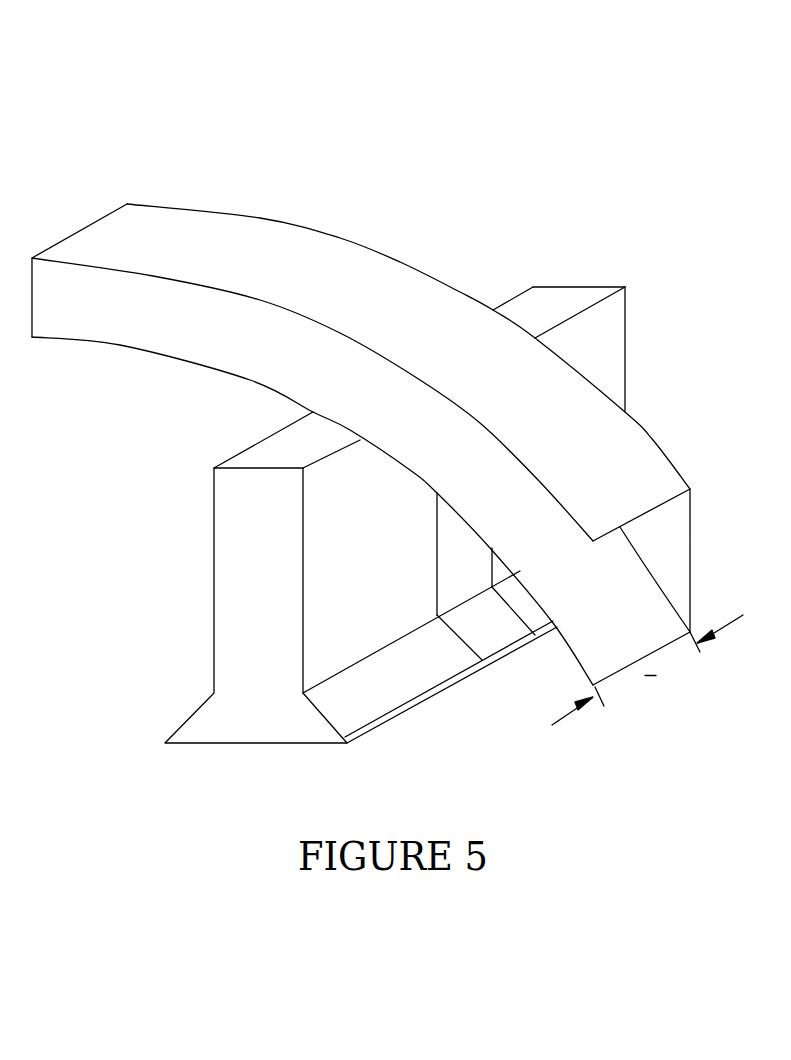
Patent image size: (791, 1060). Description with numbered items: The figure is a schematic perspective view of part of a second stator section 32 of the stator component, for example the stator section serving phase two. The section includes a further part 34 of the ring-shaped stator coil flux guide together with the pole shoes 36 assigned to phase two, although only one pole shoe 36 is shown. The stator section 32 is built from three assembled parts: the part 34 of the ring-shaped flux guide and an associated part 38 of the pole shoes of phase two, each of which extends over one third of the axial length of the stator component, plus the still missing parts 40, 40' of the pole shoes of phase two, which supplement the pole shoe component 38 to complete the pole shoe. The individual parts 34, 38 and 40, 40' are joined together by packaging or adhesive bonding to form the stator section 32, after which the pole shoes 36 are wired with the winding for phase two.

The second stator section 32 is at (346, 124).
The part of the ring-shaped stator coil flux guide 34 is at (643, 473).
The pole shoe 36 is at (650, 277).
The part of the pole shoes 38 is at (498, 637).
The part of the pole shoes 40 is at (559, 249).
The part of the pole shoes 40' is at (241, 577).